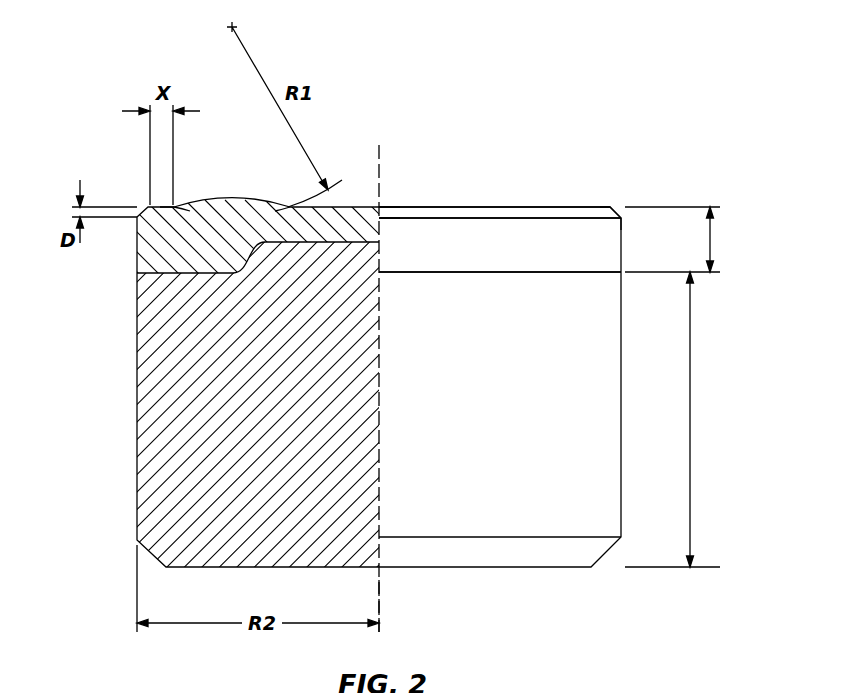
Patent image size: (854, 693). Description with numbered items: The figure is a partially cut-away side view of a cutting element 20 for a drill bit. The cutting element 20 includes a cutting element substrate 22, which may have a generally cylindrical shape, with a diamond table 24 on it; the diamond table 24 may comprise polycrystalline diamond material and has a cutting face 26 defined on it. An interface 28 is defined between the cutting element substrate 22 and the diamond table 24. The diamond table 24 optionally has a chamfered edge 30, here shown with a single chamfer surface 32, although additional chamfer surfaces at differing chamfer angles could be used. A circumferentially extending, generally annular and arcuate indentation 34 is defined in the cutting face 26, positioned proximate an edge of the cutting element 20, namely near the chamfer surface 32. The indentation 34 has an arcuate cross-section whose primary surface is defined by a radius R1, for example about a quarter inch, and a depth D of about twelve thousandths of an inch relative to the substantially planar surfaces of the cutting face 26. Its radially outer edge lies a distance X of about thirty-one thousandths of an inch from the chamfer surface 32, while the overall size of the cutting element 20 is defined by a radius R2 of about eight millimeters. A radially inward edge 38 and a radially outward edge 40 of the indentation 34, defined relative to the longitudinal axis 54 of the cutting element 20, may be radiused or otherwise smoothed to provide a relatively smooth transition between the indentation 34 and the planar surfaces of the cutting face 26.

The cutting element 20 is at (512, 124).
The cutting element substrate 22 is at (514, 410).
The diamond table 24 is at (514, 259).
The cutting face 26 is at (385, 207).
The interface 28 is at (163, 273).
The chamfered edge 30 is at (628, 204).
The chamfer surface 32 is at (573, 212).
The indentation 34 is at (230, 202).
The radially inward edge 38 is at (288, 206).
The radially outward edge 40 is at (173, 206).
The longitudinal axis 54 is at (380, 601).